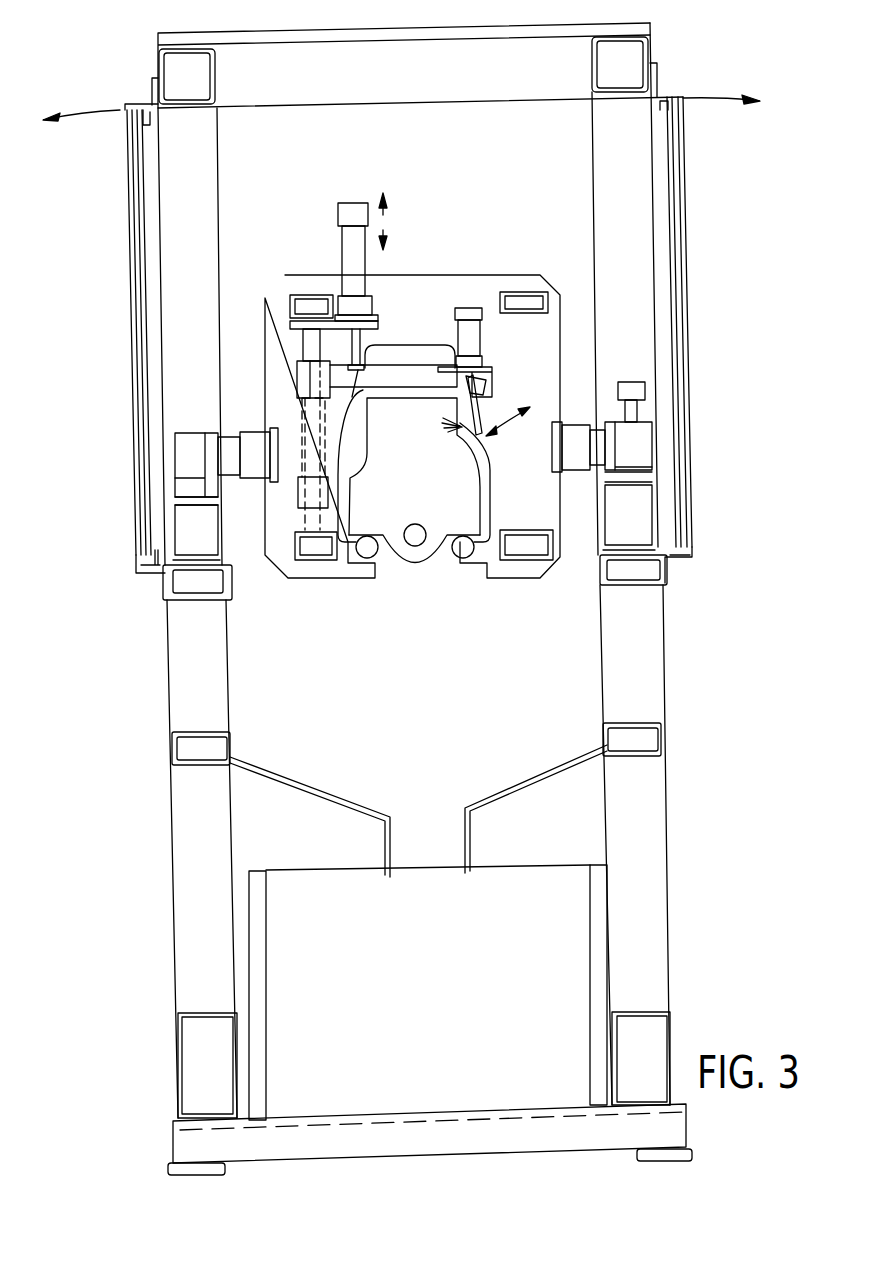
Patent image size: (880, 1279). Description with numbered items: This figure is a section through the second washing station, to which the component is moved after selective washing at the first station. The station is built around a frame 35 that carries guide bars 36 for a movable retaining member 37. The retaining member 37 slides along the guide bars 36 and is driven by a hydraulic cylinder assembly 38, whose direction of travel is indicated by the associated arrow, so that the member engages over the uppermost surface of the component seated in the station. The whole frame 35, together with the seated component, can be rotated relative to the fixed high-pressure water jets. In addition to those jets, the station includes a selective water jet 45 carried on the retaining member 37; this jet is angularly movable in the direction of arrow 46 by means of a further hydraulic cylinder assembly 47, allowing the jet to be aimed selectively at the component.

The frame 35 is at (300, 298).
The guide bars 36 is at (303, 341).
The retaining member 37 is at (300, 386).
The hydraulic cylinder assembly 38 is at (363, 262).
The selective water jet 45 is at (490, 413).
The arrow 46 is at (510, 428).
The hydraulic cylinder assembly 47 is at (482, 333).